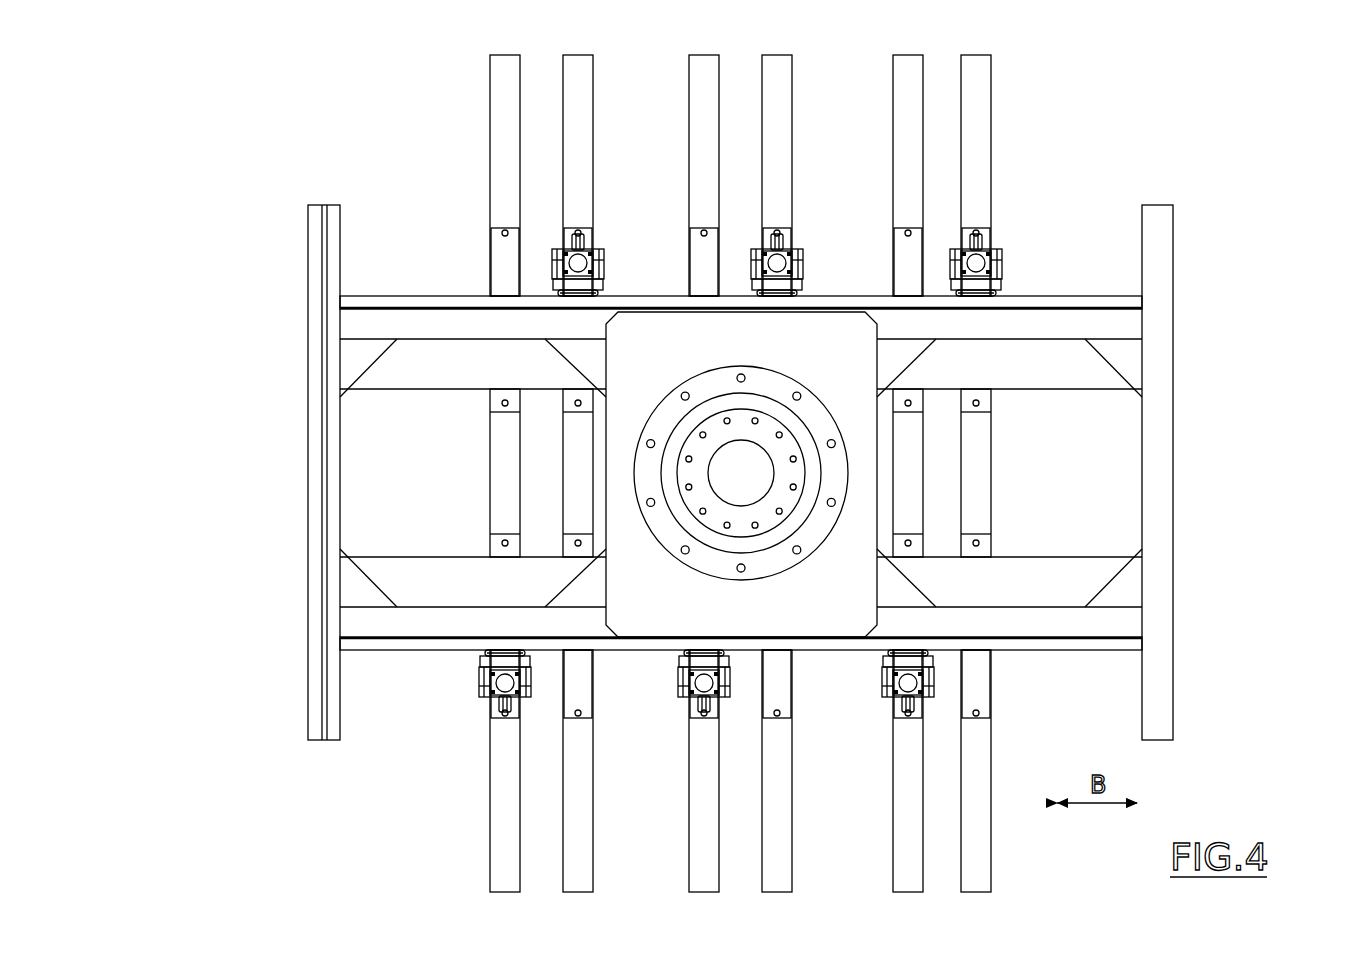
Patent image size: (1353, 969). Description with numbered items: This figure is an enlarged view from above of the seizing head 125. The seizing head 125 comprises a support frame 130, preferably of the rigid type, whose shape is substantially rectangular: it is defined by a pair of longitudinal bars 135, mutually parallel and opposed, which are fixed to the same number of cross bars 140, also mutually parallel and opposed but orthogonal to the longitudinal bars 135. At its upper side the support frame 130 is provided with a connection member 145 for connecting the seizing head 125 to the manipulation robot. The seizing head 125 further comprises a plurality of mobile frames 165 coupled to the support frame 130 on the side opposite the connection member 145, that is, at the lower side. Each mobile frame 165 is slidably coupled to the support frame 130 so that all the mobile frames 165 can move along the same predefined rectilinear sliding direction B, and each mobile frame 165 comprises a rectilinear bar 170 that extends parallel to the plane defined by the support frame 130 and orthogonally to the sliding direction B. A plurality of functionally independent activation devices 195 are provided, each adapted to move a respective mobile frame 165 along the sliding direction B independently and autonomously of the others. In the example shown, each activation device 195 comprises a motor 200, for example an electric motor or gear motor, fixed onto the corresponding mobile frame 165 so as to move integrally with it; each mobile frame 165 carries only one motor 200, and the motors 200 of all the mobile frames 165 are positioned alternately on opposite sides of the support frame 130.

The seizing head 125 is at (242, 757).
The support frame 130 is at (288, 272).
The longitudinal bars 135 is at (322, 490).
The cross bars 140 is at (1057, 325).
The connection member 145 is at (773, 488).
The mobile frames 165 is at (478, 77).
The rectilinear bar 170 is at (502, 124).
The activation devices 195 is at (552, 237).
The motor 200 is at (578, 263).